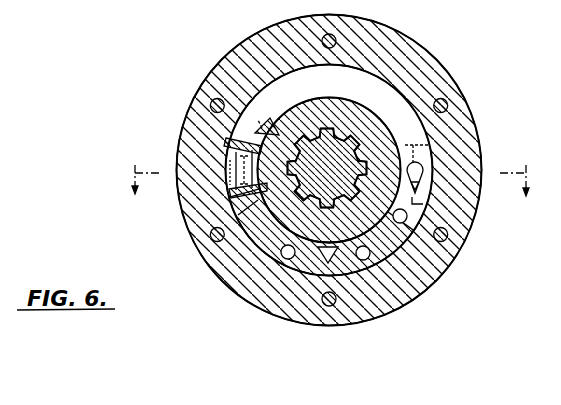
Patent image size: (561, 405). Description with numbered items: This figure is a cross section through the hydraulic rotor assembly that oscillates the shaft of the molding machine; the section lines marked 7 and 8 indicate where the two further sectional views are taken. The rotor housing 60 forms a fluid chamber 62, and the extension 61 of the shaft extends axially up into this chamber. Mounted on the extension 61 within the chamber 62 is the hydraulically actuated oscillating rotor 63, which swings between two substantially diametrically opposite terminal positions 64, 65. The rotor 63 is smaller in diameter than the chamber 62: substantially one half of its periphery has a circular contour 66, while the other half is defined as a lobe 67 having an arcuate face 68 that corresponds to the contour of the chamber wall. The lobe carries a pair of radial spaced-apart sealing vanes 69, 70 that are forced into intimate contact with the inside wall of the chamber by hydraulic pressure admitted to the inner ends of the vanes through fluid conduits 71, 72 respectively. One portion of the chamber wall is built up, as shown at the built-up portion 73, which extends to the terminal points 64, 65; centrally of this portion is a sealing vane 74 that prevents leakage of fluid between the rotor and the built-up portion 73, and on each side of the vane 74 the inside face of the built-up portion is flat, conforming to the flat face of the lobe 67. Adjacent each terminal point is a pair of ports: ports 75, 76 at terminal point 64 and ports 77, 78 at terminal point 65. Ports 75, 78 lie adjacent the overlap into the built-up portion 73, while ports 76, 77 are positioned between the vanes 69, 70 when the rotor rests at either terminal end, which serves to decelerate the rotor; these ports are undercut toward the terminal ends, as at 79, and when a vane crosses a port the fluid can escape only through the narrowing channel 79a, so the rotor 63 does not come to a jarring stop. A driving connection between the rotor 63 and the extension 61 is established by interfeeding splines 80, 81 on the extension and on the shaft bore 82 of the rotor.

The rotor housing 60 is at (355, 169).
The shaft extension 61 is at (329, 164).
The fluid chamber 62 is at (342, 145).
The oscillating rotor 63 is at (327, 142).
The terminal position 64 is at (189, 216).
The terminal position 65 is at (461, 231).
The circular contour 66 is at (354, 170).
The lobe 67 is at (301, 93).
The arcuate face 68 is at (197, 131).
The sealing vane 69 is at (229, 86).
The sealing vane 70 is at (183, 205).
The fluid conduit 71 is at (272, 128).
The fluid conduit 72 is at (248, 275).
The built-up portion 73 is at (286, 290).
The sealing vane 74 is at (344, 309).
The port 75 is at (218, 261).
The port 76 is at (151, 196).
The port 77 is at (458, 137).
The port 78 is at (356, 249).
The undercut 79 is at (159, 218).
The narrowing channel 79a is at (469, 155).
The spline 80 is at (410, 287).
The spline 81 is at (377, 303).
The shaft bore 82 is at (347, 313).
The section line 7- 7 is at (329, 171).
The section line 8- 8 is at (405, 168).